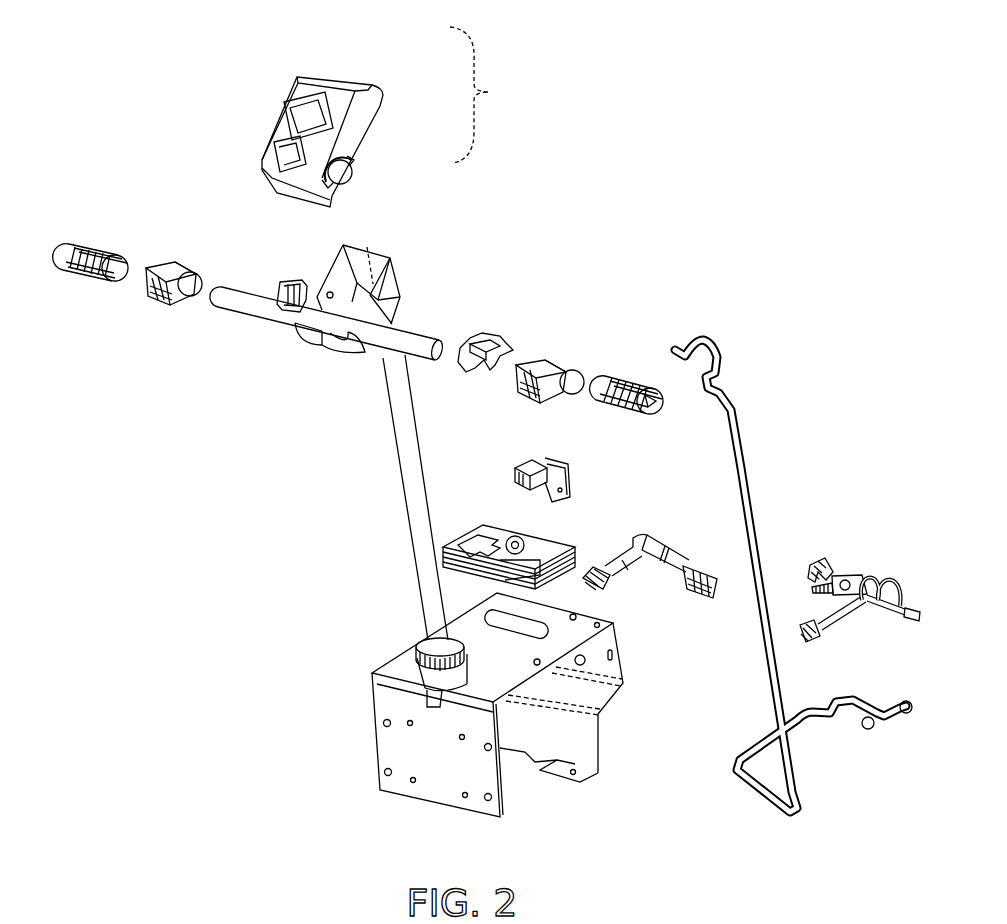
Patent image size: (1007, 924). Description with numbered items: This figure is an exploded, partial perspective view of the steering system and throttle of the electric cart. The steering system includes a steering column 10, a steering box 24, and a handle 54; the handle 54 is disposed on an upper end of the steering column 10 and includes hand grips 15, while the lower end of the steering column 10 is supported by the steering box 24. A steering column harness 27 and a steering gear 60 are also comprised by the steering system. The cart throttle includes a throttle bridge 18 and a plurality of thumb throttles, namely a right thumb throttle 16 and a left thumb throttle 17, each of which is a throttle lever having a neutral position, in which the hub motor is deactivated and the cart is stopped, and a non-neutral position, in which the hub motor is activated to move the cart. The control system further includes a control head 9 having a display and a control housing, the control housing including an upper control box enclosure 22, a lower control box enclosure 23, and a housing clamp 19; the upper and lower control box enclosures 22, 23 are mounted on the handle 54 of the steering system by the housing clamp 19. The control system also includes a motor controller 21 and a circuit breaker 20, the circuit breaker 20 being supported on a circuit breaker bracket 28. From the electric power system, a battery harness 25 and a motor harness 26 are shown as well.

The control head 9 is at (481, 95).
The steering column 10 is at (388, 490).
The hand grips 15 is at (94, 250).
The right thumb throttle 16 is at (553, 358).
The left thumb throttle 17 is at (170, 262).
The throttle bridge 18 is at (492, 335).
The housing clamp 19 is at (284, 312).
The circuit breaker 20 is at (566, 450).
The motor controller 21 is at (542, 538).
The upper control box enclosure 22 is at (385, 96).
The lower control box enclosure 23 is at (367, 247).
The steering box 24 is at (372, 672).
The battery harness 25 is at (850, 575).
The motor harness 26 is at (657, 564).
The steering column harness 27 is at (740, 420).
The circuit breaker bracket 28 is at (565, 480).
The handle 54 is at (246, 284).
The steering gear 60 is at (422, 632).